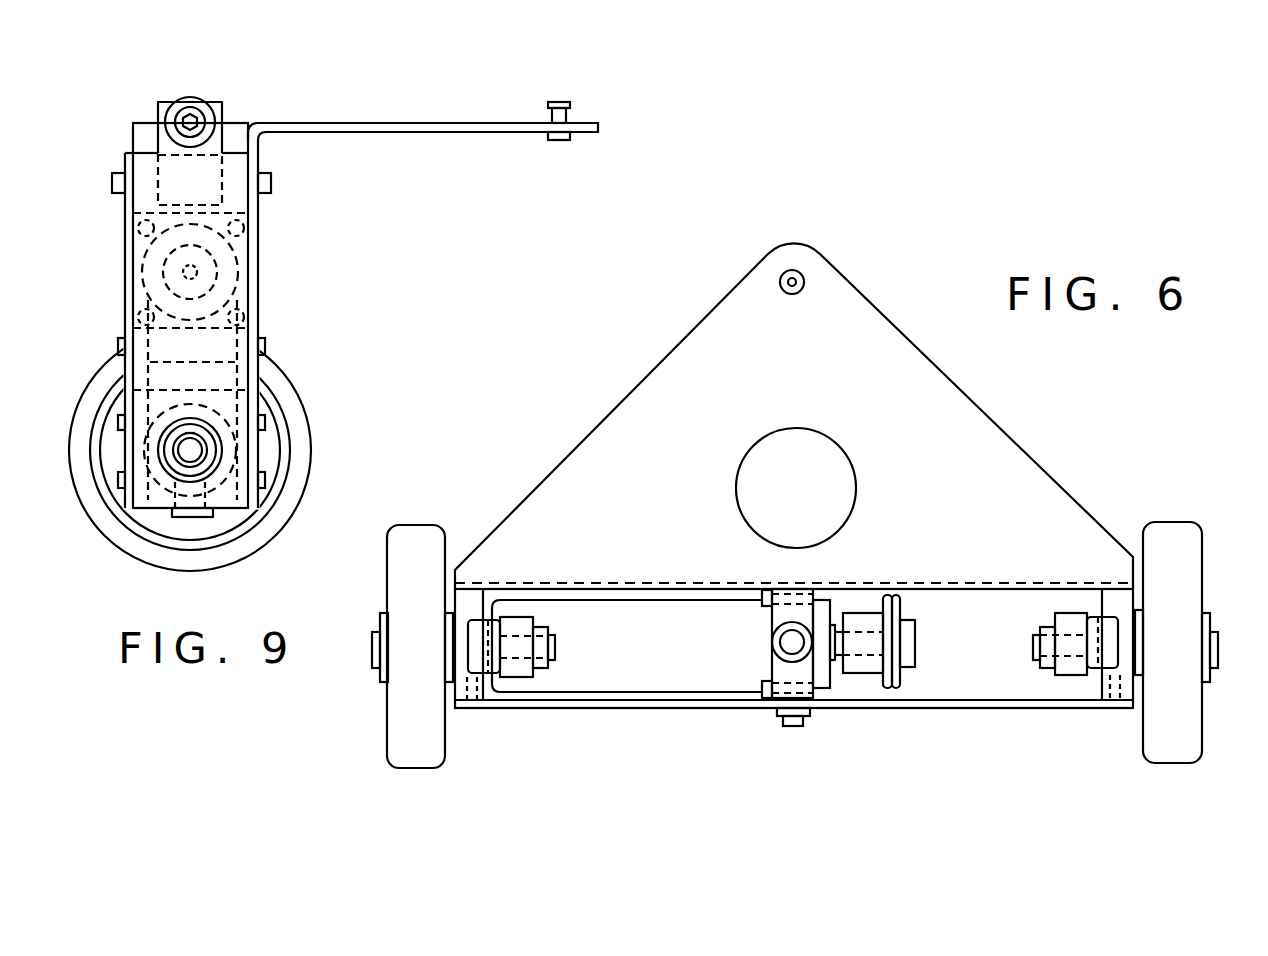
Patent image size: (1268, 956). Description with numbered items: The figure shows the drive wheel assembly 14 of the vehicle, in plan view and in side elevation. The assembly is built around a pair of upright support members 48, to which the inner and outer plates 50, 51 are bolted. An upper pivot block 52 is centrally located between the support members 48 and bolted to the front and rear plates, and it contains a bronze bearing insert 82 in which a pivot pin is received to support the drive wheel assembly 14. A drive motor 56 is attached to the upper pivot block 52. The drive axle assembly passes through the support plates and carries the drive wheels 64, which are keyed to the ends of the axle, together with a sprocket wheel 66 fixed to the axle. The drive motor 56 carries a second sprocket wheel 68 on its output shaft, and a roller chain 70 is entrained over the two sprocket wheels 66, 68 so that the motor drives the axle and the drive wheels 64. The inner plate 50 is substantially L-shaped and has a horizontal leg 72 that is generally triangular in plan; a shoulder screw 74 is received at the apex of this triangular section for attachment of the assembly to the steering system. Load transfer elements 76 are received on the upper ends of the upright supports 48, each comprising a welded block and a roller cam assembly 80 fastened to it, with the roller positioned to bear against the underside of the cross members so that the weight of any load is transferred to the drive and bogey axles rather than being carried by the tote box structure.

In FIG. 9, the drive wheel assembly 14 is at (262, 228).
In FIG. 6, the drive wheel assembly 14 is at (601, 712).
In FIG. 6, the upright support members 48 is at (445, 601).
In FIG. 9, the inner plate 50 is at (258, 300).
In FIG. 6, the inner plate 50 is at (1012, 588).
In FIG. 9, the outer plate 51 is at (125, 300).
In FIG. 6, the outer plate 51 is at (972, 708).
In FIG. 6, the upper pivot block 52 is at (817, 672).
In FIG. 6, the drive motor 56 is at (683, 693).
In FIG. 9, the drive wheels 64 is at (312, 450).
In FIG. 6, the drive wheels 64 is at (388, 735).
In FIG. 9, the sprocket wheel 66 is at (240, 450).
In FIG. 9, the sprocket wheel 68 is at (240, 258).
In FIG. 6, the sprocket wheel 68 is at (915, 620).
In FIG. 9, the roller chain 70 is at (263, 375).
In FIG. 6, the roller chain 70 is at (900, 676).
In FIG. 9, the horizontal leg 72 is at (356, 123).
In FIG. 6, the horizontal leg 72 is at (794, 416).
In FIG. 9, the shoulder screw 74 is at (570, 112).
In FIG. 6, the shoulder screw 74 is at (805, 272).
In FIG. 9, the load transfer elements 76 is at (228, 106).
In FIG. 6, the load transfer elements 76 is at (506, 680).
In FIG. 9, the roller cam assembly 80 is at (192, 97).
In FIG. 6, the roller cam assembly 80 is at (468, 652).
In FIG. 9, the bronze bearing inserts 82 is at (182, 512).
In FIG. 6, the bronze bearing inserts 82 is at (772, 638).